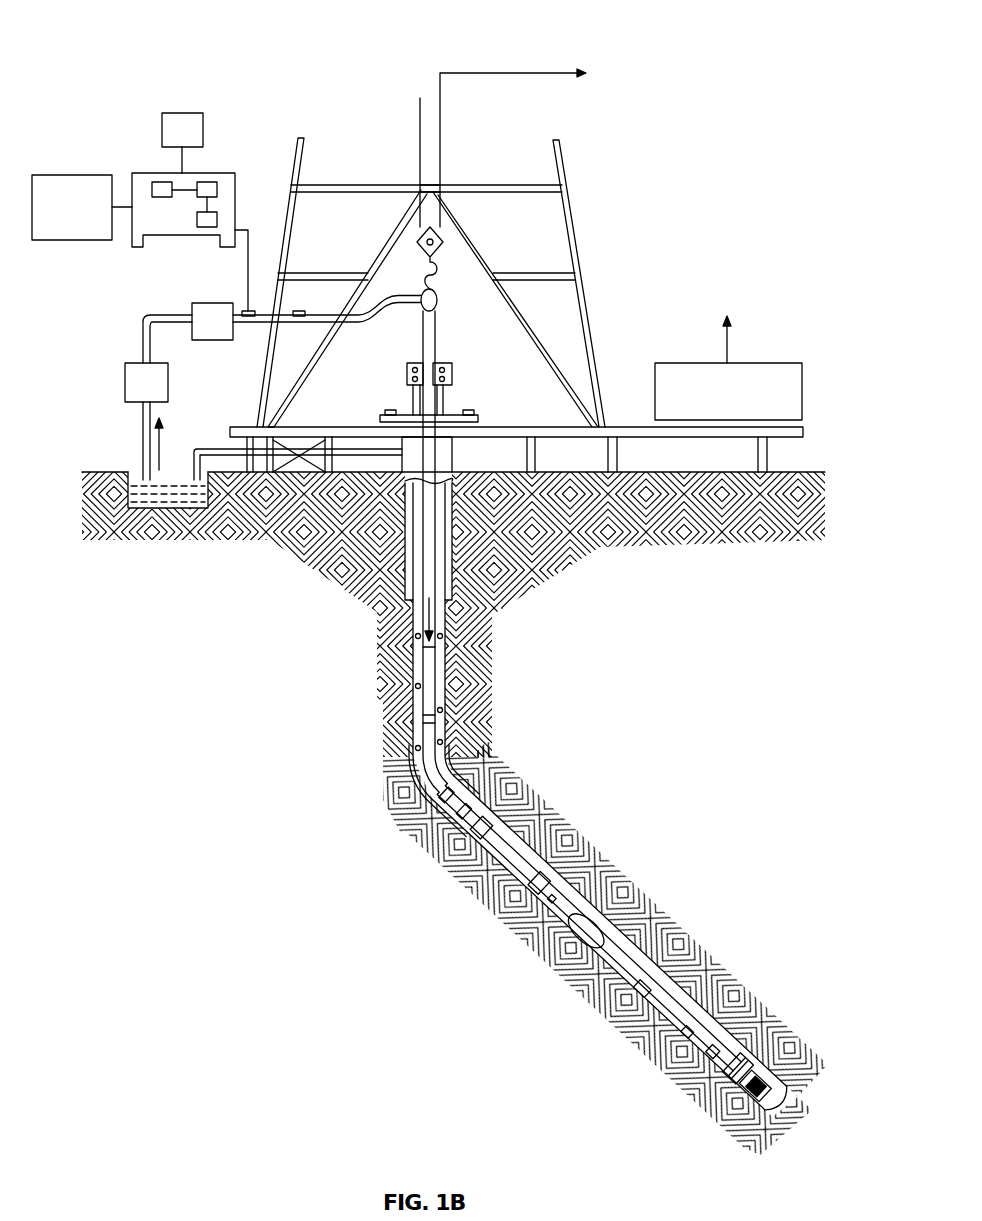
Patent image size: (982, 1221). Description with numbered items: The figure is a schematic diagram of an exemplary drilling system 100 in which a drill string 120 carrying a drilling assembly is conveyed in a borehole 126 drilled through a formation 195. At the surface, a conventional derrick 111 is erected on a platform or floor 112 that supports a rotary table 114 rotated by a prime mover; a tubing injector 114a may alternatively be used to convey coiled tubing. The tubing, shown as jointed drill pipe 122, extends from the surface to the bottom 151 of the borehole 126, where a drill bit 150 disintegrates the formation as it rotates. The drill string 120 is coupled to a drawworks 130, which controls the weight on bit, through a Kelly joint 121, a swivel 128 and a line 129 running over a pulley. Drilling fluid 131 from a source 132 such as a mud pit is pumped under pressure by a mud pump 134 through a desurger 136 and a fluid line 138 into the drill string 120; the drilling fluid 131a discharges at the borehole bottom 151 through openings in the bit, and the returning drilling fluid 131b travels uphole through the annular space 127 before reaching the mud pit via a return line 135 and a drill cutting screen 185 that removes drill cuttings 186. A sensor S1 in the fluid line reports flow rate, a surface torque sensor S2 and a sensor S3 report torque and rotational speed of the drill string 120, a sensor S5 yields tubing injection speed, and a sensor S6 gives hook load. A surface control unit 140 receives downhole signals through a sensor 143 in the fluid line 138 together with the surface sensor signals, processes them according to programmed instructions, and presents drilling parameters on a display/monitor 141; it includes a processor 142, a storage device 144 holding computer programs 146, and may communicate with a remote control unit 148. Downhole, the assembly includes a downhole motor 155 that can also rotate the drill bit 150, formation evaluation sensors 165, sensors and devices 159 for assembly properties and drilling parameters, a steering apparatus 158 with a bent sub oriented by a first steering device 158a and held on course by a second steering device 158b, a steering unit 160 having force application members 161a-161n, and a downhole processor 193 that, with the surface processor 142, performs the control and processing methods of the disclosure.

The drilling system 100 is at (118, 43).
The derrick 111 is at (588, 292).
The platform or floor 112 is at (603, 426).
The rotary table 114 is at (466, 410).
The tubing injector 114a is at (452, 373).
The drill string 120 is at (453, 667).
The Kelly joint 121 is at (440, 350).
The jointed drill pipe 122 is at (412, 660).
The borehole 126 is at (455, 752).
The annular space 127 is at (470, 798).
The swivel 128 is at (416, 306).
The line 129 is at (440, 163).
The drawworks 130 is at (748, 363).
The drilling fluid 131 is at (140, 506).
The drilling fluid from the drilling tubular 131a is at (413, 606).
The returning drilling fluid 131b is at (416, 777).
The source of drilling fluid 132 is at (150, 478).
The mud pump 134 is at (125, 380).
The return line 135 is at (332, 456).
The desurger 136 is at (192, 310).
The fluid line 138 is at (257, 323).
The surface control unit 140 is at (165, 173).
The display/monitor 141 is at (183, 112).
The processor 142 is at (160, 182).
The sensor 143 is at (247, 311).
The storage device 144 is at (207, 182).
The computer programs 146 is at (207, 227).
The remote control unit 148 is at (95, 175).
The drill bit 150 is at (778, 1076).
The borehole bottom 151 is at (730, 1145).
The downhole motor 155 is at (528, 842).
The steering apparatus 158 is at (736, 1036).
The first steering device 158a is at (707, 1120).
The second steering device 158b is at (710, 1096).
The sensors and devices 159 is at (760, 1052).
The steering unit 160 is at (705, 1066).
The force application members 161a-161n is at (718, 1030).
The formation evaluation sensors 165 is at (612, 1000).
The drill cutting screen 185 is at (268, 422).
The drill cuttings 186 is at (450, 636).
The downhole processor 193 is at (572, 952).
The formation 195 is at (710, 843).
The sensor S1 is at (300, 311).
The surface torque sensor S2 is at (474, 416).
The sensor S3 is at (388, 411).
The sensor S5 is at (436, 322).
The sensor S6 is at (440, 292).